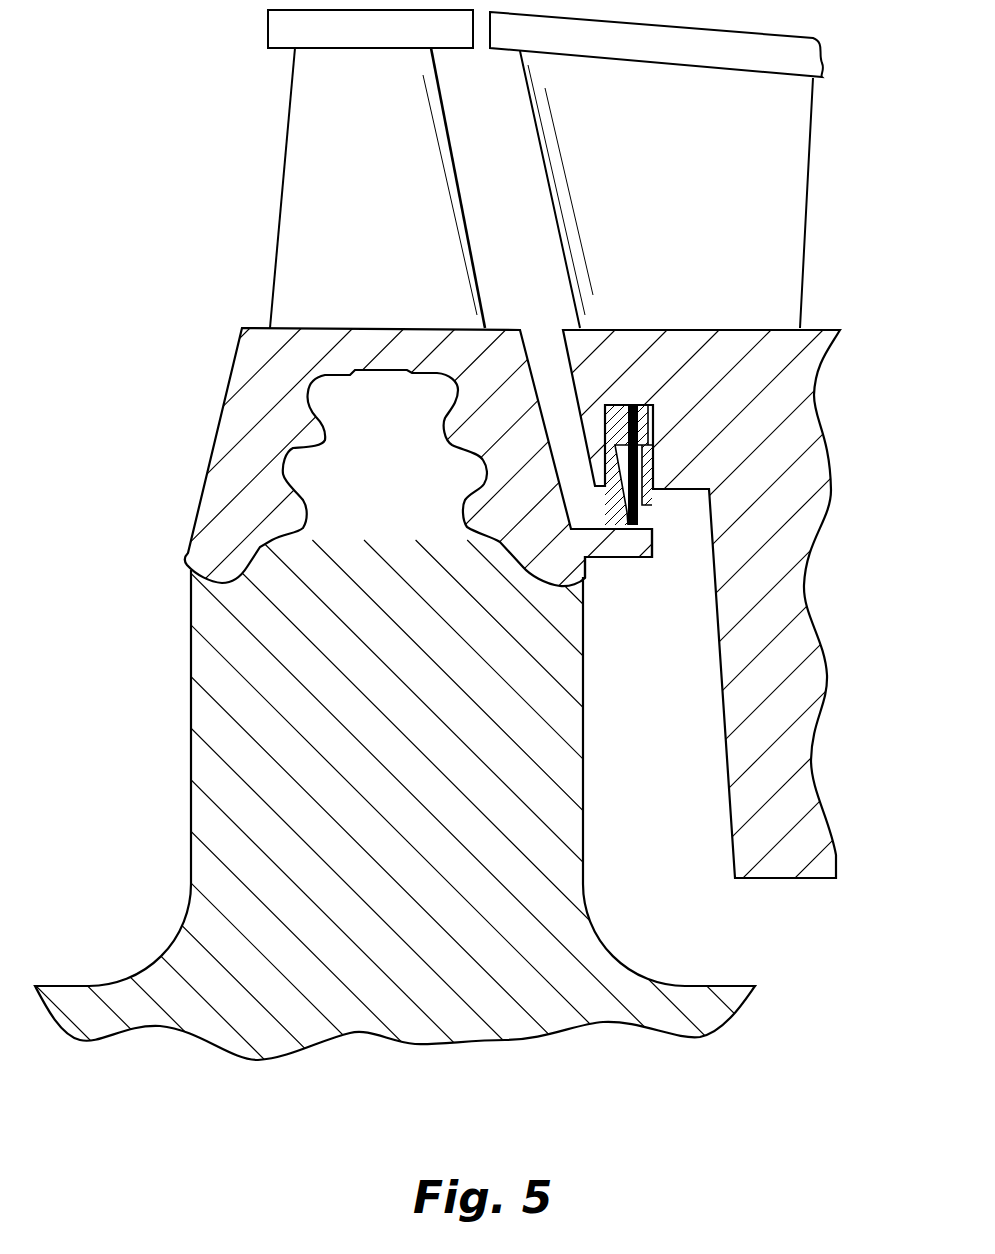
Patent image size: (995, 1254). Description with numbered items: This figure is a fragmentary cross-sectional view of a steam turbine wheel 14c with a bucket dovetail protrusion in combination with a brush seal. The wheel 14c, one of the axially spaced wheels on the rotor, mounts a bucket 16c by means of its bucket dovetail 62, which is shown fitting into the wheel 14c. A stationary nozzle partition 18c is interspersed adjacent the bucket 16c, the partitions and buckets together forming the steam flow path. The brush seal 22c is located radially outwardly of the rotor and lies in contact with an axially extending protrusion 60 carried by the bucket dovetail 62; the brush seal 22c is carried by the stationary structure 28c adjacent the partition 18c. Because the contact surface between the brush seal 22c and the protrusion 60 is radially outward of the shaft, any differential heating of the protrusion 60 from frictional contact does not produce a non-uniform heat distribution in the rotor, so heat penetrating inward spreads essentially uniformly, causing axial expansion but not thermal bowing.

The wheel 14c is at (200, 713).
The bucket 16c is at (292, 200).
The nozzle partition 18c is at (793, 220).
The brush seal 22c is at (651, 410).
The seal carrier ring 28c is at (651, 525).
The axially extending protrusion 60 is at (597, 548).
The bucket dovetail 62 is at (232, 418).